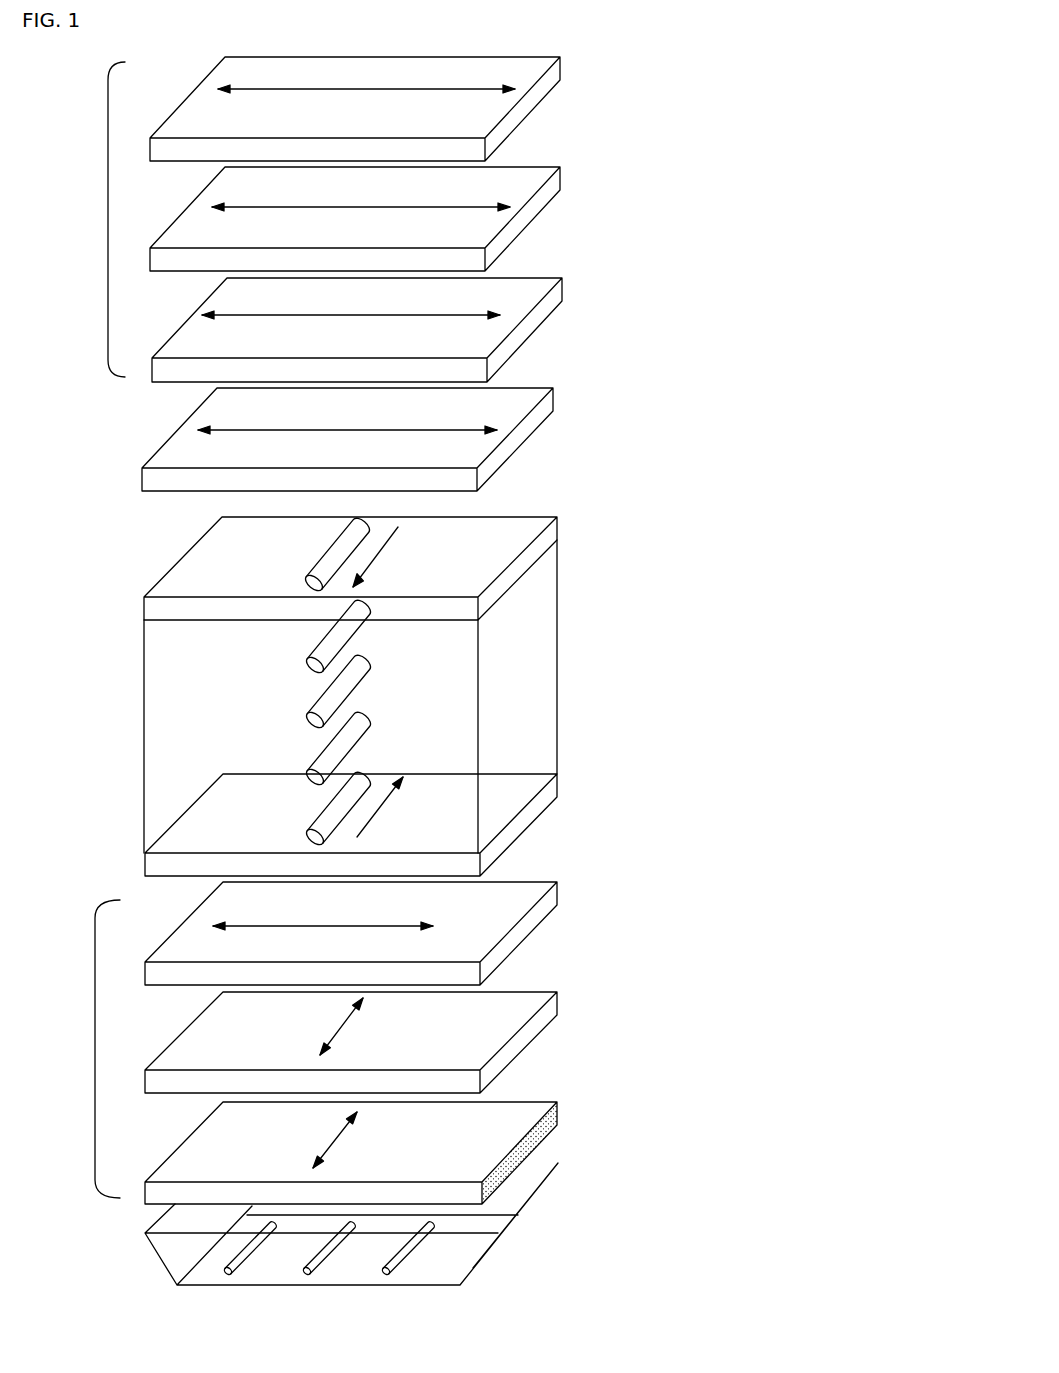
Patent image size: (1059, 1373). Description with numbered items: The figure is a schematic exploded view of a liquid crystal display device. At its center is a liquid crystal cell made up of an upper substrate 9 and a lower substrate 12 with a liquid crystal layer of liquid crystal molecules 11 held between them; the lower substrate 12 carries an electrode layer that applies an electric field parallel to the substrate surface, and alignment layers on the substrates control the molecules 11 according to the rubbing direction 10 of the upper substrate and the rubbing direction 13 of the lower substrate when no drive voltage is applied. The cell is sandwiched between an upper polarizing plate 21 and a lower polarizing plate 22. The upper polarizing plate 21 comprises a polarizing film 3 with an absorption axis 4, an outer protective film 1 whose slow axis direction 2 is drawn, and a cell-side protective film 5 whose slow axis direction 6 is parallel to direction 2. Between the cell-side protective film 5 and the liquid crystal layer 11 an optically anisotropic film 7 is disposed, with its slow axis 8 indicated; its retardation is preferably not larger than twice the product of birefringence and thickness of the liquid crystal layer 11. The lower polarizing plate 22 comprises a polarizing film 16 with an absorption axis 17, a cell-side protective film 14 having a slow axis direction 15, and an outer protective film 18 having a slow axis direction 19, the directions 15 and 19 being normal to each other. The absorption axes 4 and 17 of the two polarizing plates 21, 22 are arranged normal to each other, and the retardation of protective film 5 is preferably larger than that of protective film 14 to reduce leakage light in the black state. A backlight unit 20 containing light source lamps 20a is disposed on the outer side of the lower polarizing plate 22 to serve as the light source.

The upper polarizing plate protective film 1 is at (577, 64).
The direction of slow axis of upper polarizing plate protective film 2 is at (422, 95).
The upper polarizing plate polarizing film 3 is at (583, 177).
The absorption axis of polarizing film of upper polarizing plate 4 is at (358, 208).
The protective film of upper polarizing plate on the liquid crystal cell side 5 is at (572, 294).
The direction of slow axis of protective film of upper polarizing plate on the liqui 6 is at (370, 328).
The optically anisotropic film 7 is at (578, 408).
The slow axis of optically anisotropic film 8 is at (373, 443).
The upper substrate of liquid crystal cell 9 is at (562, 521).
The direction of rubbing of upper substrate 10 is at (392, 555).
The liquid crystal molecule 11 is at (402, 668).
The lower substrate of liquid crystal cell 12 is at (555, 790).
The direction of rubbing of lower substrate 13 is at (383, 810).
The protective film of lower polarizing plate on the liquid crystal cell side 14 is at (563, 892).
The direction of slow axis of protective film of lower polarizing plate on the liqui 15 is at (450, 928).
The polarizing film of lower polarizing plate 16 is at (563, 995).
The absorption axis of polarizing film of lower polarizing plate 17 is at (357, 1032).
The protective film of lower polarizing plate 18 is at (558, 1113).
The direction of slow axis of protective film of lower polarizing plate 19 is at (348, 1142).
The backlight unit 20 is at (540, 1199).
The light source lamp 20a is at (408, 1255).
The upper polarizing plate 21 is at (90, 219).
The lower polarizing plate 22 is at (76, 1049).